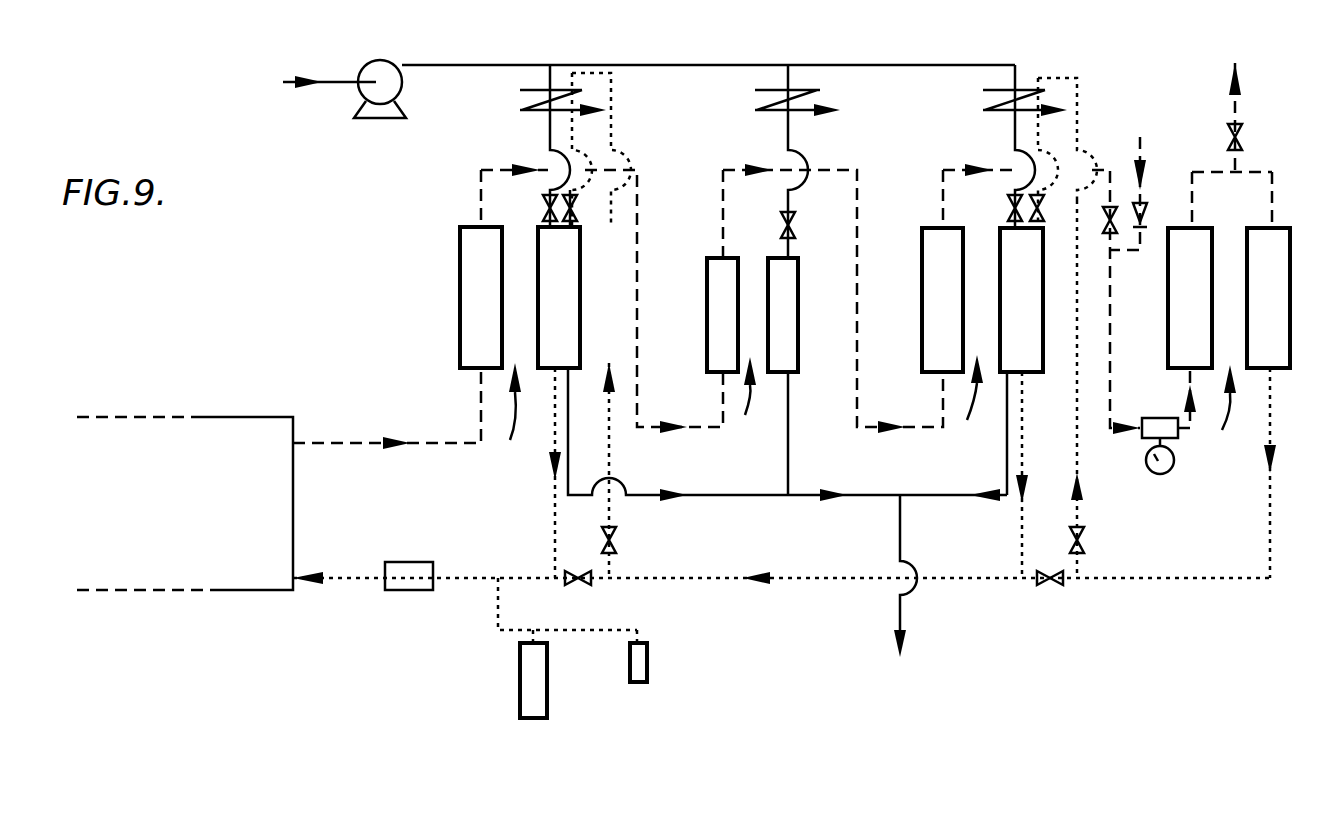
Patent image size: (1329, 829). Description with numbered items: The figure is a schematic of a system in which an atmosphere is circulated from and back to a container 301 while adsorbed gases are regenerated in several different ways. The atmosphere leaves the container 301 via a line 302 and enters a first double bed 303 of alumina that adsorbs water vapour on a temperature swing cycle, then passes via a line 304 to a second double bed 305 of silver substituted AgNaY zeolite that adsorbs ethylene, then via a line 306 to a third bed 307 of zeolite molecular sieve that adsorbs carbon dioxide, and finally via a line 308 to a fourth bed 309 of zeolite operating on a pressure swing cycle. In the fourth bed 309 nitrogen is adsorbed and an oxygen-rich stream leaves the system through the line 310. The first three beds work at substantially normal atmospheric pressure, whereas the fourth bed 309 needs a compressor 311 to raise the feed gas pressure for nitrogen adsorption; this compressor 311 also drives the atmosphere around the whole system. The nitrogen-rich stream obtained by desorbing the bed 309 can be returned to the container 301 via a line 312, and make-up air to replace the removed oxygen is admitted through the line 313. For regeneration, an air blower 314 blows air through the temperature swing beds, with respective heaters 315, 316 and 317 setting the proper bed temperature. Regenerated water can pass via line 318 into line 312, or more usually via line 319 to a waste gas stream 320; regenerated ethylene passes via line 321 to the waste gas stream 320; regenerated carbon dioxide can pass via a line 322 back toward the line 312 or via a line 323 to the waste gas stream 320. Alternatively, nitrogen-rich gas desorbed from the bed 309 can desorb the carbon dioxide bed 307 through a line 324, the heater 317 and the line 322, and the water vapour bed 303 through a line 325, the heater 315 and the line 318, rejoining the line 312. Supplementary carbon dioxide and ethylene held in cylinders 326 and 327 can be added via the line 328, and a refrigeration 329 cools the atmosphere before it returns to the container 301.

The container 301 is at (185, 503).
The line 302 is at (440, 443).
The first double bed 303 is at (504, 326).
The line 304 is at (640, 195).
The second double bed 305 is at (752, 319).
The line 306 is at (857, 178).
The third bed 307 is at (982, 315).
The line 308 is at (1110, 170).
The fourth bed 309 is at (1229, 324).
The line 310 is at (1235, 110).
The compressor 311 is at (1168, 470).
The line 312 is at (465, 582).
The line 313 is at (1140, 185).
The air blower 314 is at (375, 63).
The heater 315 is at (560, 88).
The heater 316 is at (800, 90).
The heater 317 is at (1030, 88).
The line 318 is at (555, 516).
The line 319 is at (570, 428).
The waste gas stream 320 is at (903, 615).
The line 321 is at (788, 420).
The line 322 is at (1022, 545).
The line 323 is at (1007, 472).
The line 324 is at (1077, 440).
The line 325 is at (611, 505).
The cylinder 326 is at (527, 668).
The cylinder 327 is at (640, 682).
The line 328 is at (500, 612).
The refrigeration 329 is at (400, 560).